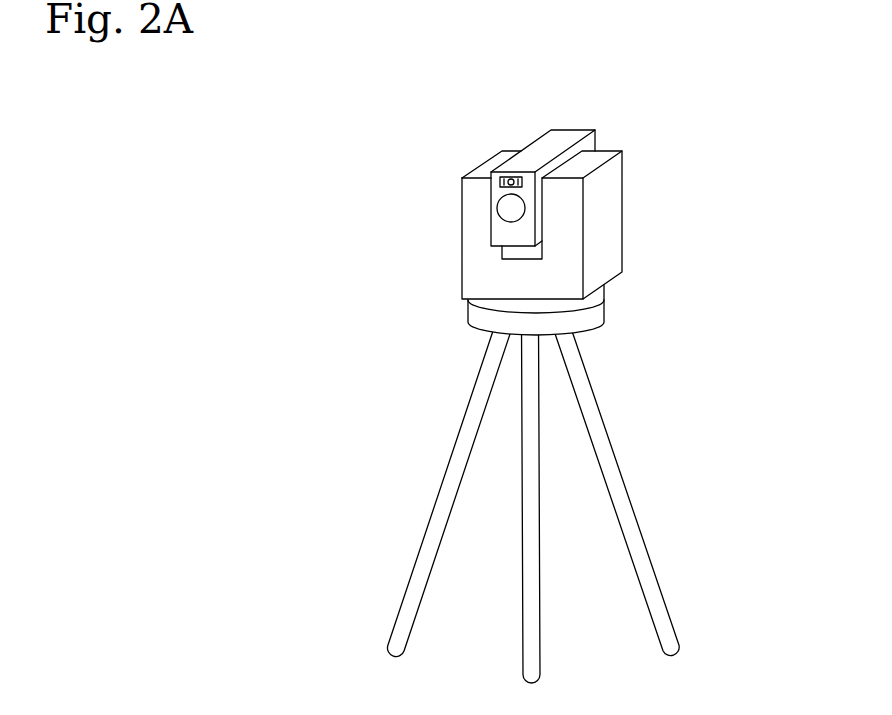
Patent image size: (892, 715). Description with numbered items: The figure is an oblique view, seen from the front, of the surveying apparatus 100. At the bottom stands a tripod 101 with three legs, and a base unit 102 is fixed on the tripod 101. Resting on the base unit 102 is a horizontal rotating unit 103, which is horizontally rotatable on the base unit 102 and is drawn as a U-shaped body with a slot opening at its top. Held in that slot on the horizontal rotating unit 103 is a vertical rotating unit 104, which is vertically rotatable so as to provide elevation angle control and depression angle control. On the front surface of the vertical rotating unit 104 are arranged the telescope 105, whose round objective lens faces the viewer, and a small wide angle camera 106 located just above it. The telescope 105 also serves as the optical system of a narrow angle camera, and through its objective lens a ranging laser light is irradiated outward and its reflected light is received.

The surveying apparatus 100 is at (589, 203).
The tripod 101 is at (607, 443).
The base unit 102 is at (603, 303).
The horizontal rotating unit 103 is at (614, 220).
The vertical rotating unit 104 is at (525, 157).
The telescope 105 is at (508, 211).
The wide angle camera 106 is at (509, 176).